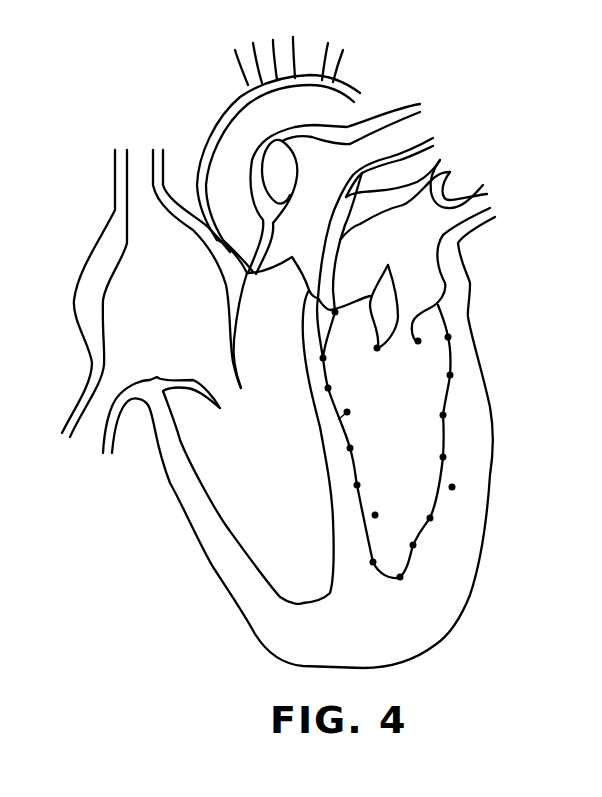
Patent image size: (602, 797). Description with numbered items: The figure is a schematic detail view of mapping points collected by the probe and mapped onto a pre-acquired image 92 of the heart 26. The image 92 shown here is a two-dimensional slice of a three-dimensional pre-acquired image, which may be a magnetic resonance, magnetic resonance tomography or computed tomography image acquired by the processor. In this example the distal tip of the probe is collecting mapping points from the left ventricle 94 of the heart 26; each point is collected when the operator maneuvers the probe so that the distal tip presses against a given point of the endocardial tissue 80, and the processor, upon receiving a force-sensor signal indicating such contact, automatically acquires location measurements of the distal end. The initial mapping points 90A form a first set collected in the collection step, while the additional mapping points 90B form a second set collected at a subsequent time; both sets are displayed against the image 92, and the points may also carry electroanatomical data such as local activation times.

The pre-acquired image 92 is at (473, 147).
The heart 26 is at (470, 260).
The left ventricle 94 is at (401, 391).
The endocardial tissue 80 is at (443, 457).
The initial mapping points 90A is at (392, 259).
The additional mapping points 90B is at (335, 312).